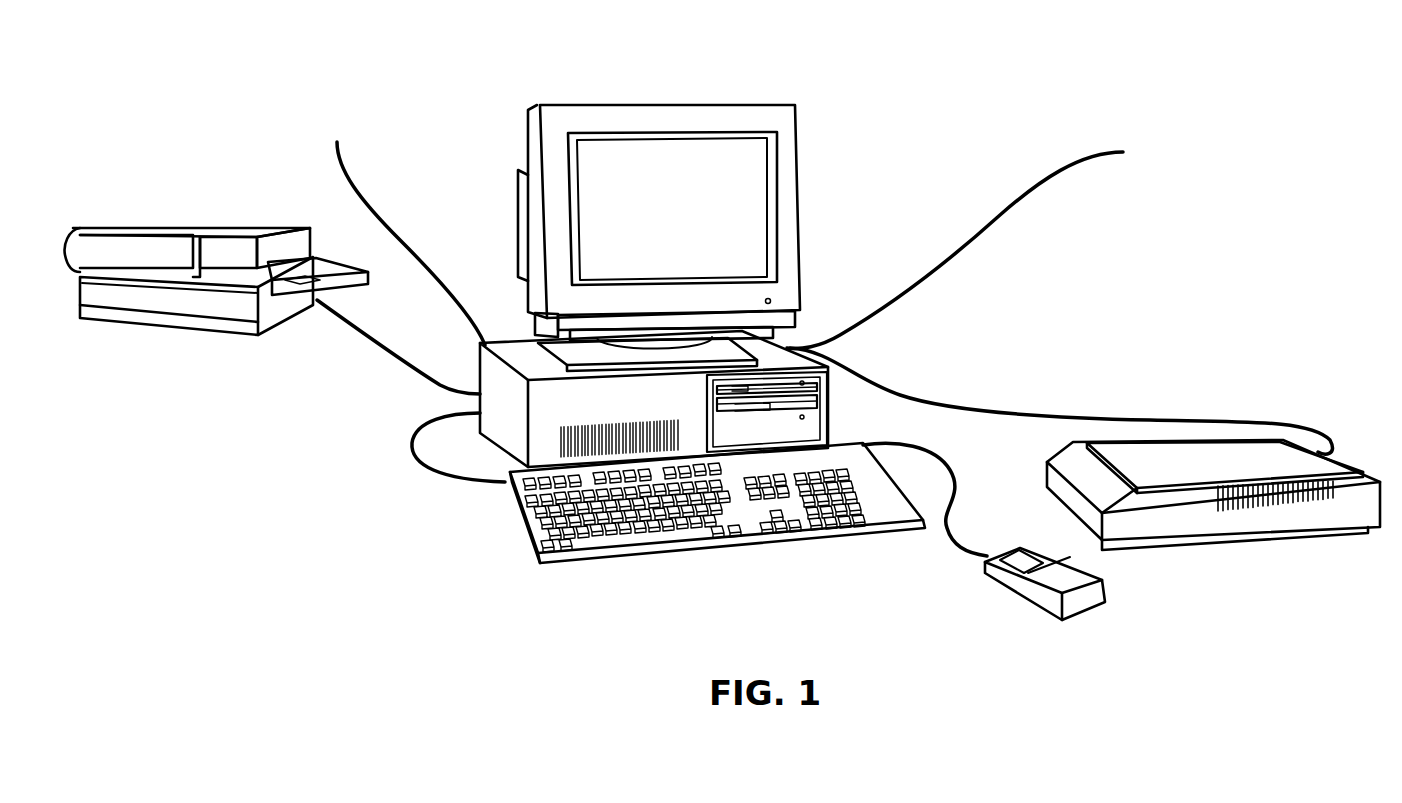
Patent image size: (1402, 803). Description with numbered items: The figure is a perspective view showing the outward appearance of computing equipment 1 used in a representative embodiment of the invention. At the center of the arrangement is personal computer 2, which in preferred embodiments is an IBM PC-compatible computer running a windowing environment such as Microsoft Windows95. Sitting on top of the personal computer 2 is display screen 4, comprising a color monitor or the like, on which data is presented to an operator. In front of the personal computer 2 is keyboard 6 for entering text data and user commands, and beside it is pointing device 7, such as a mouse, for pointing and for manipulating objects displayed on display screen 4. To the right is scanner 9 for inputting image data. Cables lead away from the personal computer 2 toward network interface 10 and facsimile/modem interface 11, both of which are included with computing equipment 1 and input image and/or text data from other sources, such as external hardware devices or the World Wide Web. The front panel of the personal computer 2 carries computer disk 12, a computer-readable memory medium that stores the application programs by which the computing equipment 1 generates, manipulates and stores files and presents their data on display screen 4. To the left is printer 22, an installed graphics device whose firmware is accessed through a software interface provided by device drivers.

The computing equipment 1 is at (864, 176).
The personal computer 2 is at (820, 315).
The display screen 4 is at (696, 105).
The keyboard 6 is at (605, 535).
The pointing device 7 is at (1067, 617).
The scanner 9 is at (1243, 543).
The network interface 10 is at (1091, 152).
The facsimile/modem interface 11 is at (378, 213).
The computer disk 12 is at (790, 405).
The printer 22 is at (142, 225).